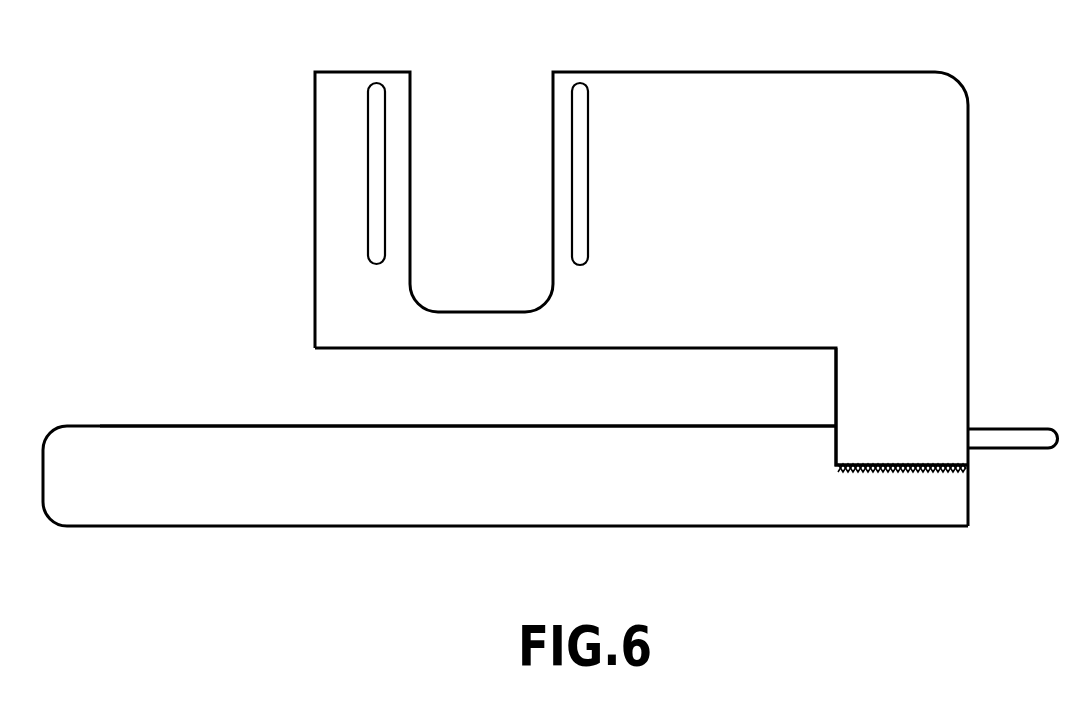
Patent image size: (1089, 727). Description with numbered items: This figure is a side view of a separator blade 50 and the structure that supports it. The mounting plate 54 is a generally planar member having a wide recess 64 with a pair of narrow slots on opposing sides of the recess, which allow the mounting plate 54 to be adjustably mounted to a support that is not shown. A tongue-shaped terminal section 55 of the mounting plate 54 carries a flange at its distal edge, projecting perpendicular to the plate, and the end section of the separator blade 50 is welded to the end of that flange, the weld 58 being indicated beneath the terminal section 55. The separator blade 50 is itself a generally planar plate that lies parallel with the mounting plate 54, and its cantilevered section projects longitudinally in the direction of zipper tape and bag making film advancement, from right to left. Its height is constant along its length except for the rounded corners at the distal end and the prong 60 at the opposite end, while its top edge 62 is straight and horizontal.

The separator blade 50 is at (425, 528).
The mounting plate 54 is at (968, 160).
The tongue-shaped terminal section 55 is at (952, 403).
The weld 58 is at (887, 468).
The prong 60 is at (1015, 450).
The top edge 62 is at (350, 423).
The wide recess 64 is at (412, 125).